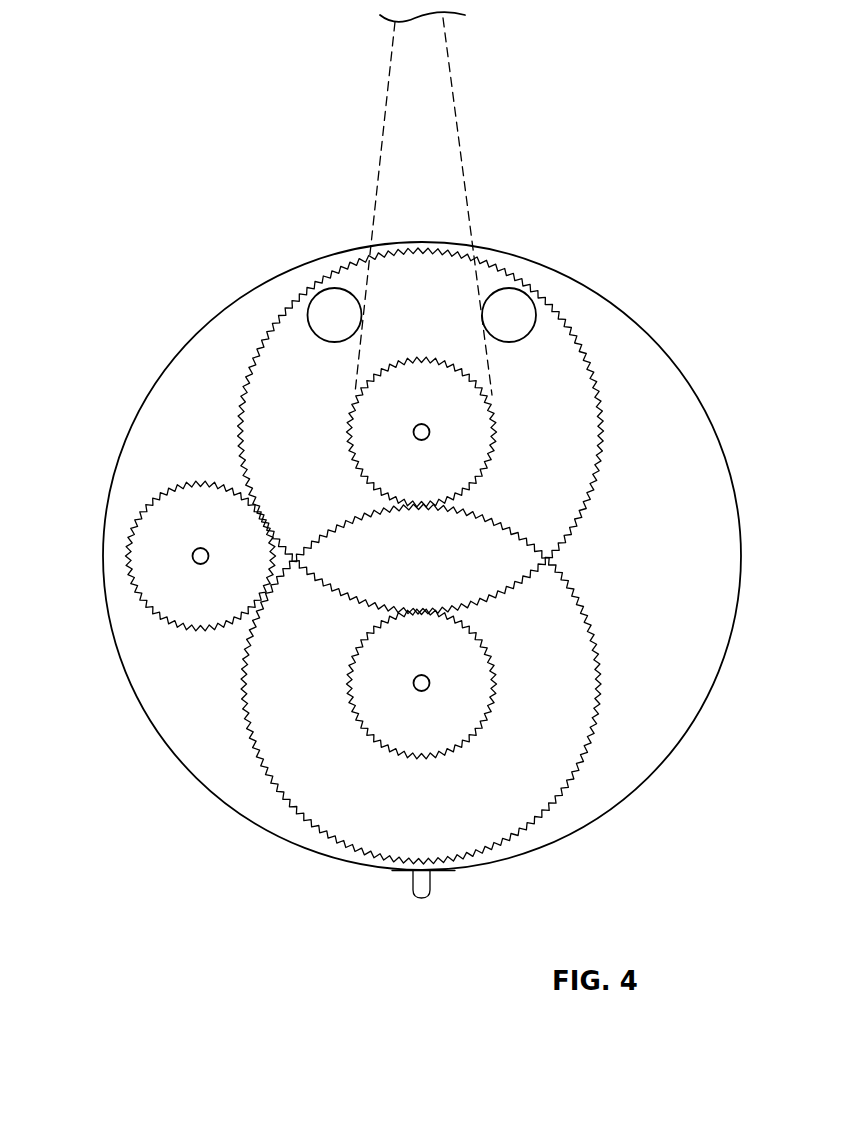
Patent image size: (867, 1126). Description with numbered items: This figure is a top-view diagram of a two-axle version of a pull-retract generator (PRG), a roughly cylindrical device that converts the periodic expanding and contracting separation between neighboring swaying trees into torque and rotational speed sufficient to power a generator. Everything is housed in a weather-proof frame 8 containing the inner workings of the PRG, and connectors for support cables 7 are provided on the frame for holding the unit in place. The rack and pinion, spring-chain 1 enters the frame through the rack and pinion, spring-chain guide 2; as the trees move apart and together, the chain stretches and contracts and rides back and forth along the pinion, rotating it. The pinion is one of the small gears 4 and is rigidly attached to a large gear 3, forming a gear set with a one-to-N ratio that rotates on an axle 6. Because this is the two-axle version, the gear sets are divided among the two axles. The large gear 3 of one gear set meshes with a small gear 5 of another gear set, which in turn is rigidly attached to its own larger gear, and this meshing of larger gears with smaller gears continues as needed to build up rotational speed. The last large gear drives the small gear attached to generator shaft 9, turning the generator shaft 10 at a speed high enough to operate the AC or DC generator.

The rack and pinion, spring-chain 1 is at (462, 135).
The rack and pinion, spring-chain guide 2 is at (515, 287).
The large gear 3 is at (585, 327).
The small gear (pinion and others) 4 is at (493, 396).
The small gear 5 is at (497, 681).
The axle 6 is at (422, 691).
The connectors for support cables 7 is at (422, 898).
The frame containing the inner workings of PRG 8 is at (262, 828).
The small gear attached to generator shaft 9 is at (197, 633).
The generator shaft 10 is at (192, 556).